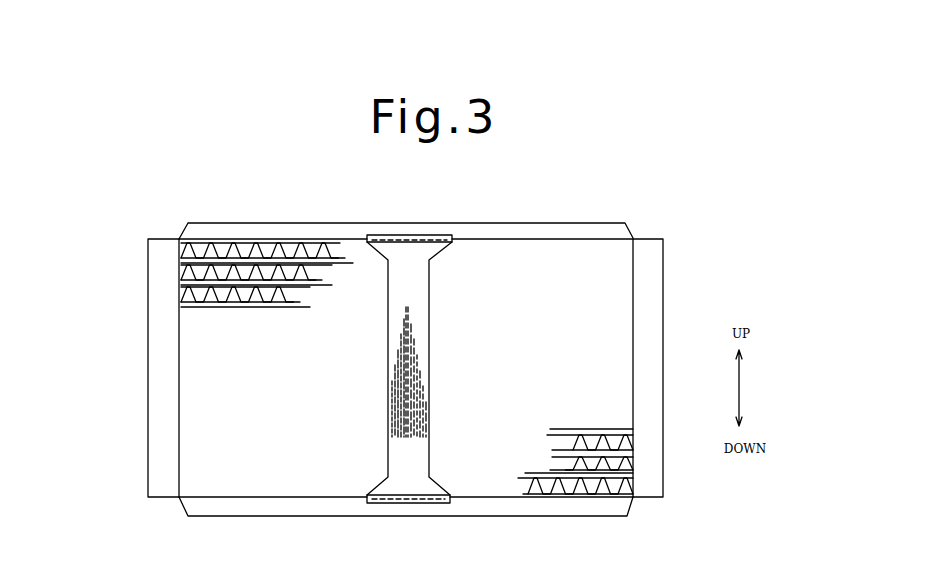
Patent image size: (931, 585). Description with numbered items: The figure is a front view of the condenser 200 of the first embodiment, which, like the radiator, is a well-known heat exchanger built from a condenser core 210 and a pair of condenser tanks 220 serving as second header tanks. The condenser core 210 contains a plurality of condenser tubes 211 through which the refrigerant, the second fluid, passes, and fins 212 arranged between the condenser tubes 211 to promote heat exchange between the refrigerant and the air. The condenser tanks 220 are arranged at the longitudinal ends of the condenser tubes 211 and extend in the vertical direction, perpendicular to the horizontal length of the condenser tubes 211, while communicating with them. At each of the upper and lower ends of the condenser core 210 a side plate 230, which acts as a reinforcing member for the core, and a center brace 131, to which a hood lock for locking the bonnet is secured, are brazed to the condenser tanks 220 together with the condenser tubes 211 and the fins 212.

The condenser 200 is at (575, 217).
The condenser core 210 is at (500, 278).
The condenser tank 220 is at (158, 289).
The side plate 230 is at (342, 231).
The center brace 131 is at (430, 303).
The condenser tube 211 is at (268, 270).
The fin 212 is at (203, 241).